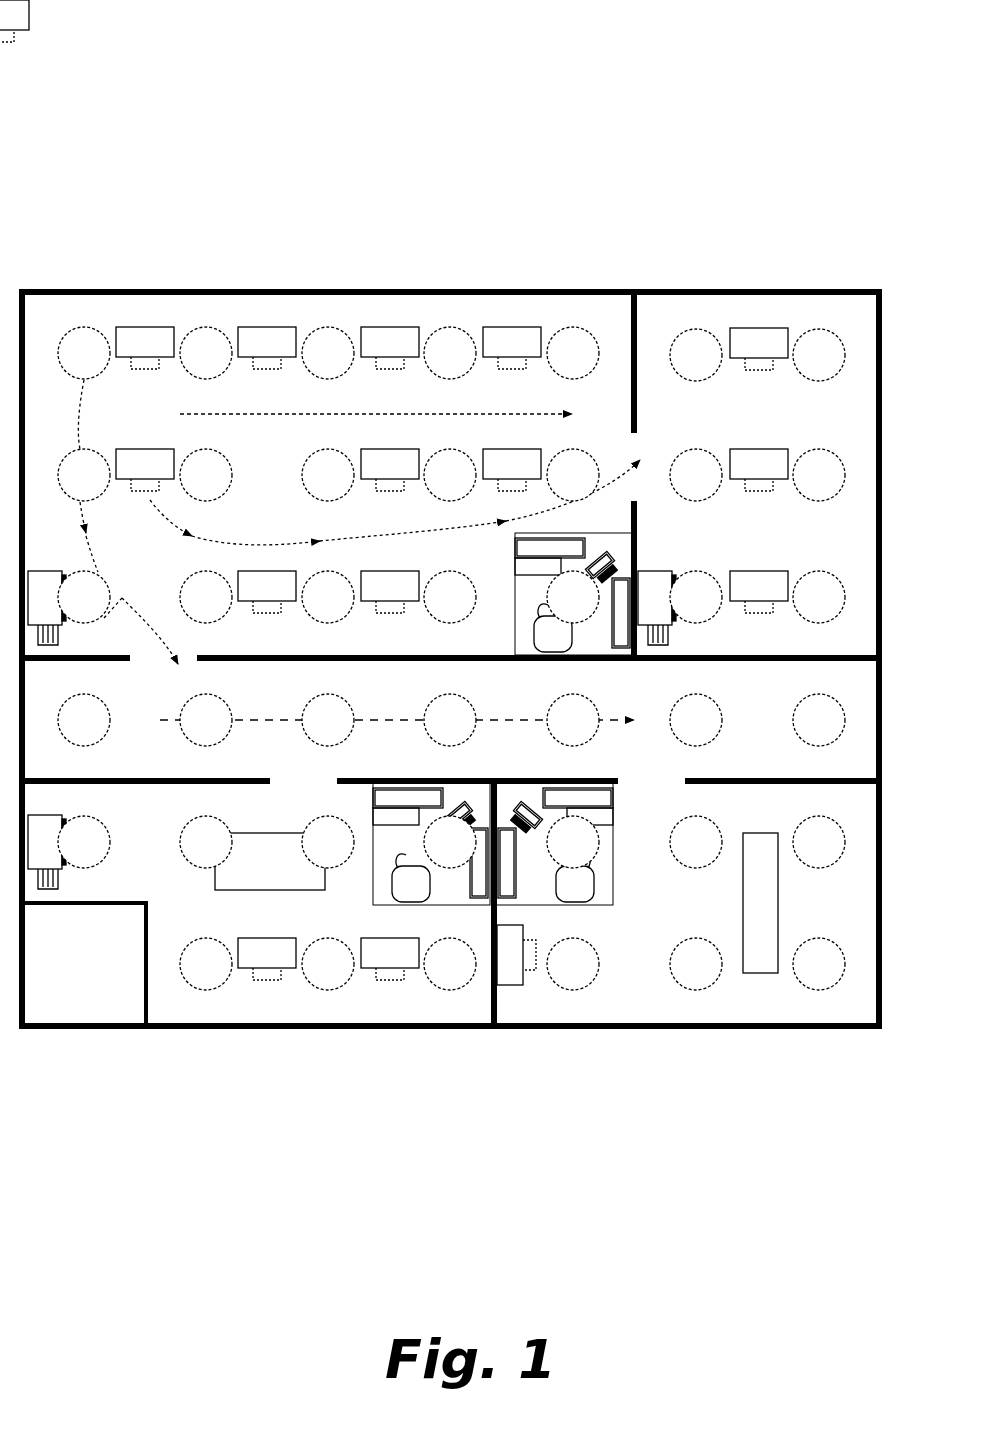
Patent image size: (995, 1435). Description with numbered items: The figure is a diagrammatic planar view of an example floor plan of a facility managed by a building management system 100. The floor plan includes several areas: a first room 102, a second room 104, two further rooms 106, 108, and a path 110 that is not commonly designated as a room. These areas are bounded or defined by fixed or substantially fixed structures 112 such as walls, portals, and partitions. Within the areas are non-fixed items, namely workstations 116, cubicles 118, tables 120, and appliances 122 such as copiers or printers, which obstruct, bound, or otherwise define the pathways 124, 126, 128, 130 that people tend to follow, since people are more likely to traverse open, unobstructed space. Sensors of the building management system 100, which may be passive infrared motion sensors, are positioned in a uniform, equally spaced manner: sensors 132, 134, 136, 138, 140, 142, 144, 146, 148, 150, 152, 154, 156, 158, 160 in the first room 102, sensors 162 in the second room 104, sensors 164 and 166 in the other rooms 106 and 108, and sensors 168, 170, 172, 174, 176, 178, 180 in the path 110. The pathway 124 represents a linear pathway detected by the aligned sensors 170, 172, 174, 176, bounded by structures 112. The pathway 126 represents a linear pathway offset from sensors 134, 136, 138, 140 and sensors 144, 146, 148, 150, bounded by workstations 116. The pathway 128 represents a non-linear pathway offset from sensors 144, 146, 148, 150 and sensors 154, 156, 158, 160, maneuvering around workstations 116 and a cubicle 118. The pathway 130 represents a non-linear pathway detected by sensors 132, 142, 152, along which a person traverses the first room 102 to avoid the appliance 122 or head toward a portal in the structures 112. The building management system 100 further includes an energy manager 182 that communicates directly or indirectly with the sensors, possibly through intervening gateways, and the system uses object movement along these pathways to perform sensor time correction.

The building management system 100 is at (121, 76).
The first room 102 is at (328, 474).
The second room 104 is at (756, 474).
The room 106 is at (258, 903).
The room 108 is at (686, 903).
The path 110 is at (450, 719).
The structures 112 is at (476, 291).
The workstations 116 is at (394, 492).
The cubicles 118 is at (516, 558).
The tables 120 is at (496, 903).
The appliances 122 is at (352, 730).
The pathway 124 is at (378, 716).
The pathway 126 is at (338, 413).
The pathway 128 is at (346, 528).
The pathway 130 is at (80, 410).
The sensor 132 is at (84, 353).
The sensor 134 is at (206, 353).
The sensor 136 is at (328, 353).
The sensor 138 is at (450, 353).
The sensor 140 is at (573, 353).
The sensor 142 is at (84, 475).
The sensor 144 is at (206, 475).
The sensor 146 is at (328, 475).
The sensor 148 is at (450, 475).
The sensor 150 is at (573, 475).
The sensor 152 is at (84, 597).
The sensor 154 is at (206, 597).
The sensor 156 is at (328, 597).
The sensor 158 is at (450, 597).
The sensor 160 is at (573, 597).
The sensors 162 is at (757, 476).
The sensors 164 is at (267, 903).
The sensors 166 is at (696, 903).
The sensor 168 is at (84, 720).
The sensor 170 is at (206, 720).
The sensor 172 is at (328, 720).
The sensor 174 is at (450, 720).
The sensor 176 is at (573, 720).
The sensor 178 is at (696, 720).
The sensor 180 is at (819, 720).
The energy manager 182 is at (84, 964).